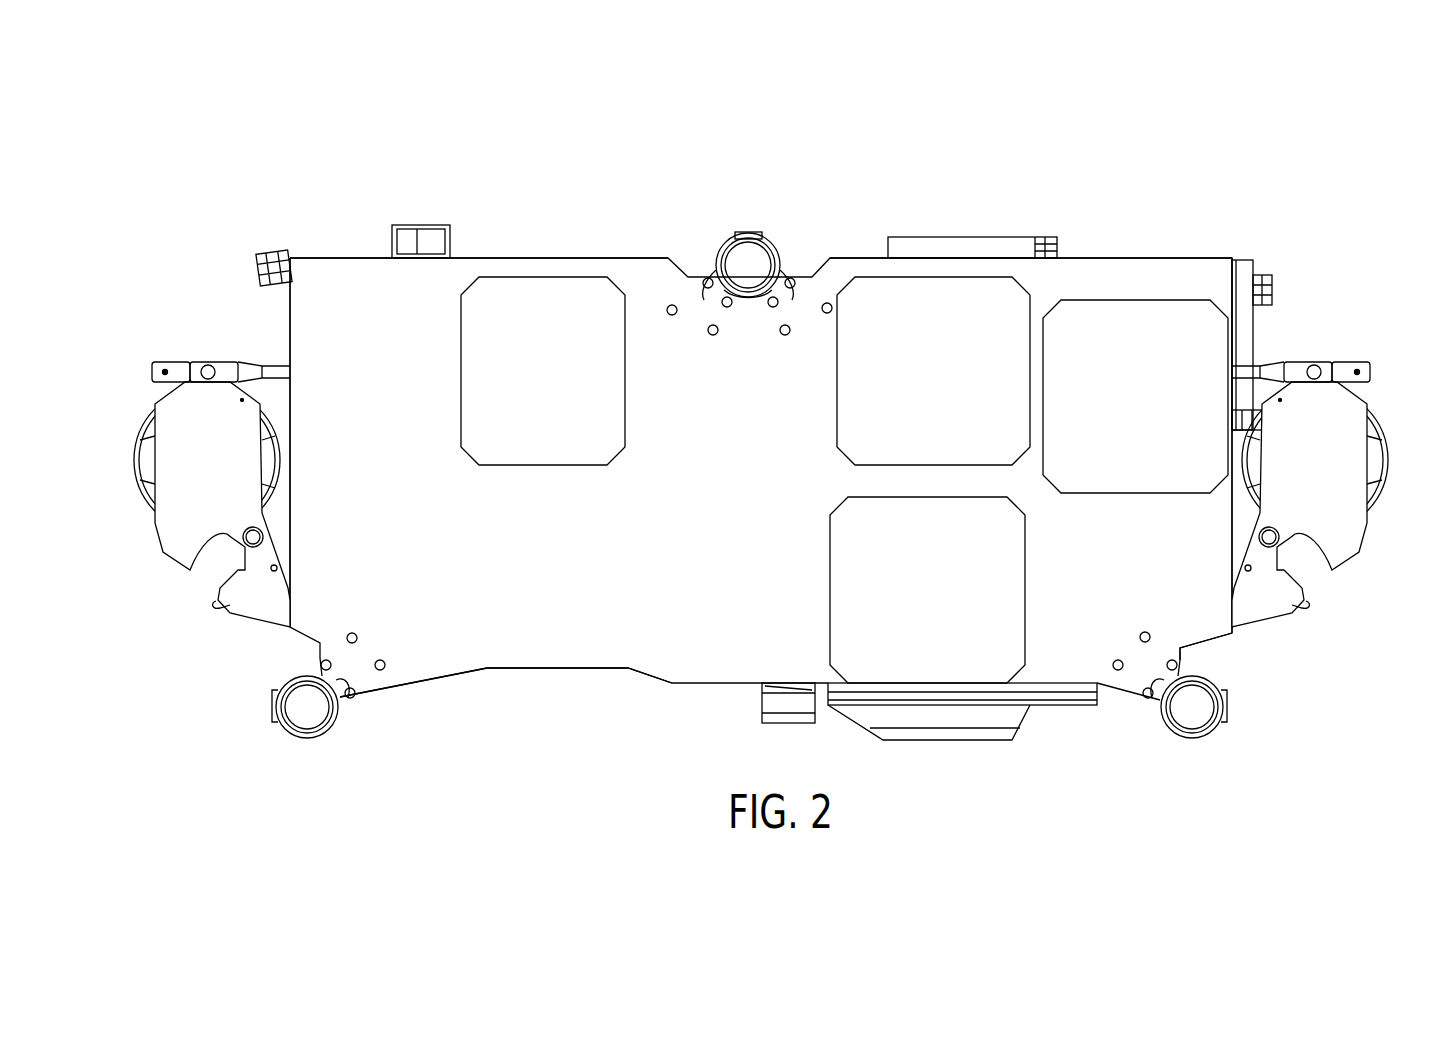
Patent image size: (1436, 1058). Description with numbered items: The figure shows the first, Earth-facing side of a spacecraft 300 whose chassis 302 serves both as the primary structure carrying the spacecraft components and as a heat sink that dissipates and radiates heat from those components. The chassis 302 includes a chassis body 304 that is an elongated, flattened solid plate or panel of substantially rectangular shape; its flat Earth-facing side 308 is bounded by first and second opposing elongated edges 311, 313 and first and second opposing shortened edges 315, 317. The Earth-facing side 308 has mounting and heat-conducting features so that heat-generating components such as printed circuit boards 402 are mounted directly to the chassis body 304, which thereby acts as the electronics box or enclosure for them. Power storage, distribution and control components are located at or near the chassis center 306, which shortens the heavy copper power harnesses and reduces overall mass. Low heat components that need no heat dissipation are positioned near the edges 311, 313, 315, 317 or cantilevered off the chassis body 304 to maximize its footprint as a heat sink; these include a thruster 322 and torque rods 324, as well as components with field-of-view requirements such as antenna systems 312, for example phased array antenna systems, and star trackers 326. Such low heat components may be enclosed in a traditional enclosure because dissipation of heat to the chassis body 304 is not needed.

The spacecraft 300 is at (1278, 165).
The chassis 302 is at (1200, 245).
The chassis body 304 is at (1152, 281).
The chassis center 306 is at (778, 438).
The first (Earth-facing) side 308 is at (1087, 285).
The first elongated edge 311 is at (598, 258).
The antenna system 312 is at (118, 460).
The second elongated edge 313 is at (558, 668).
The first shortened edge 315 is at (290, 322).
The second shortened edge 317 is at (1238, 605).
The thruster 322 is at (790, 724).
The torque rods 324 is at (962, 237).
The star trackers 326 is at (258, 268).
The printed circuit boards (PCBs) 402 is at (547, 341).